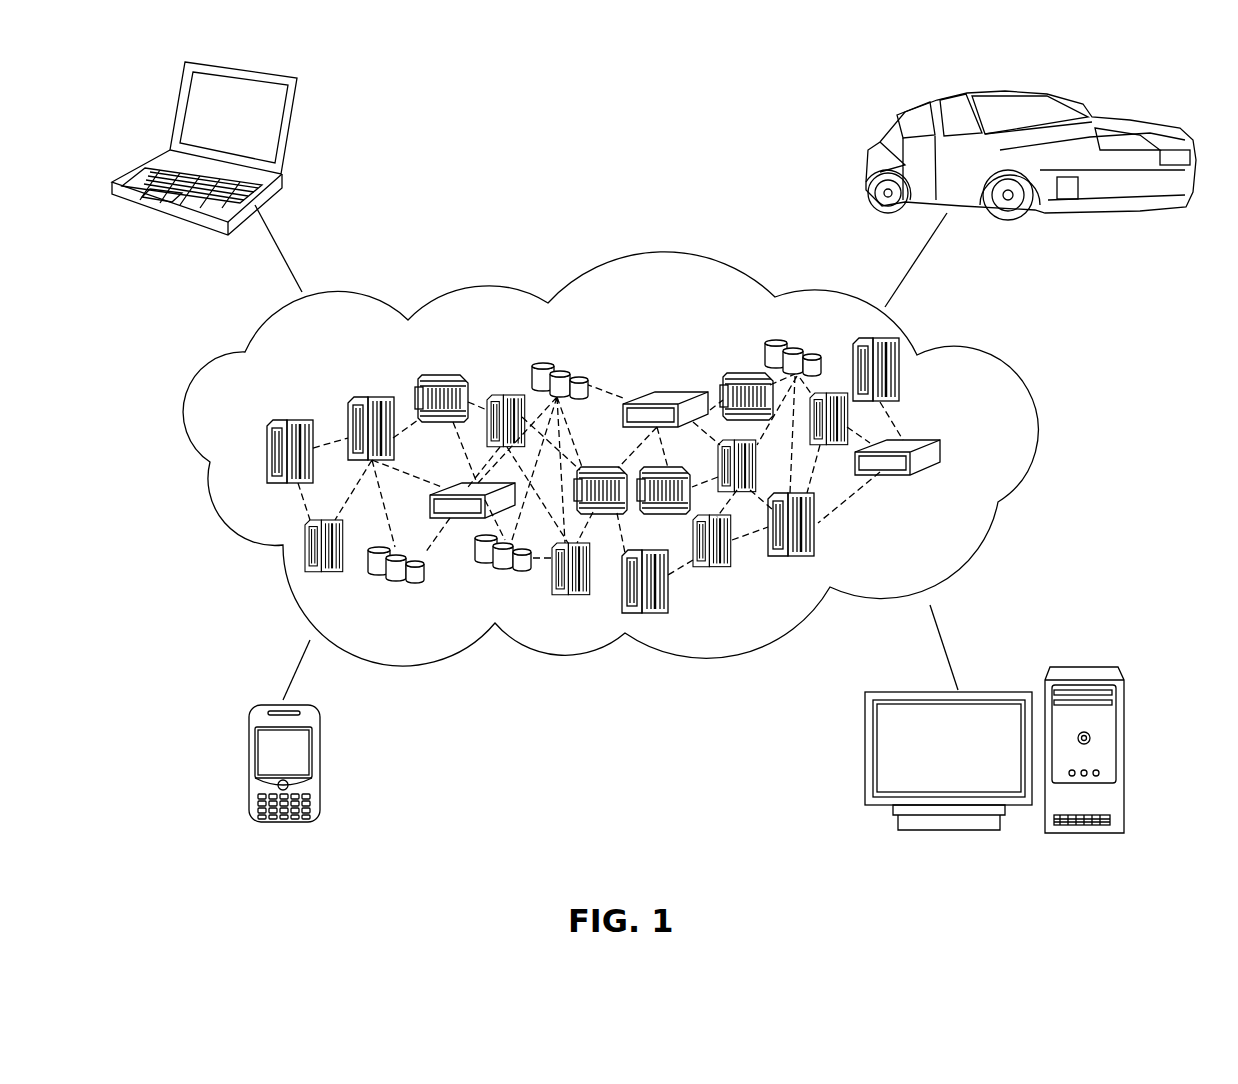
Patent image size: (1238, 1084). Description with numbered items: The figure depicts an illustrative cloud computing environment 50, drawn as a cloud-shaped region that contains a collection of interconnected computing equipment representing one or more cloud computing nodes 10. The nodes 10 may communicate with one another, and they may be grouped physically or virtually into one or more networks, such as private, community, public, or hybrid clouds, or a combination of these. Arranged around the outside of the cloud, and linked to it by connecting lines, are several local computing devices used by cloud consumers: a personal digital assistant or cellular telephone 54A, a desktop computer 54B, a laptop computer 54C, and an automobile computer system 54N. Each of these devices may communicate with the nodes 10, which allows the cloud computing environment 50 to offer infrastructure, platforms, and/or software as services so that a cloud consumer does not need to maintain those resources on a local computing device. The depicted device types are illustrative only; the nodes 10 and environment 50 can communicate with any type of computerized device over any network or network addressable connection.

The cloud computing nodes 10 is at (988, 454).
The cloud computing environment 50 is at (1007, 367).
The personal digital assistant (PDA) or cellular telephone 54A is at (249, 770).
The desktop computer 54B is at (1087, 667).
The laptop computer 54C is at (293, 130).
The automobile computer system 54N is at (876, 140).